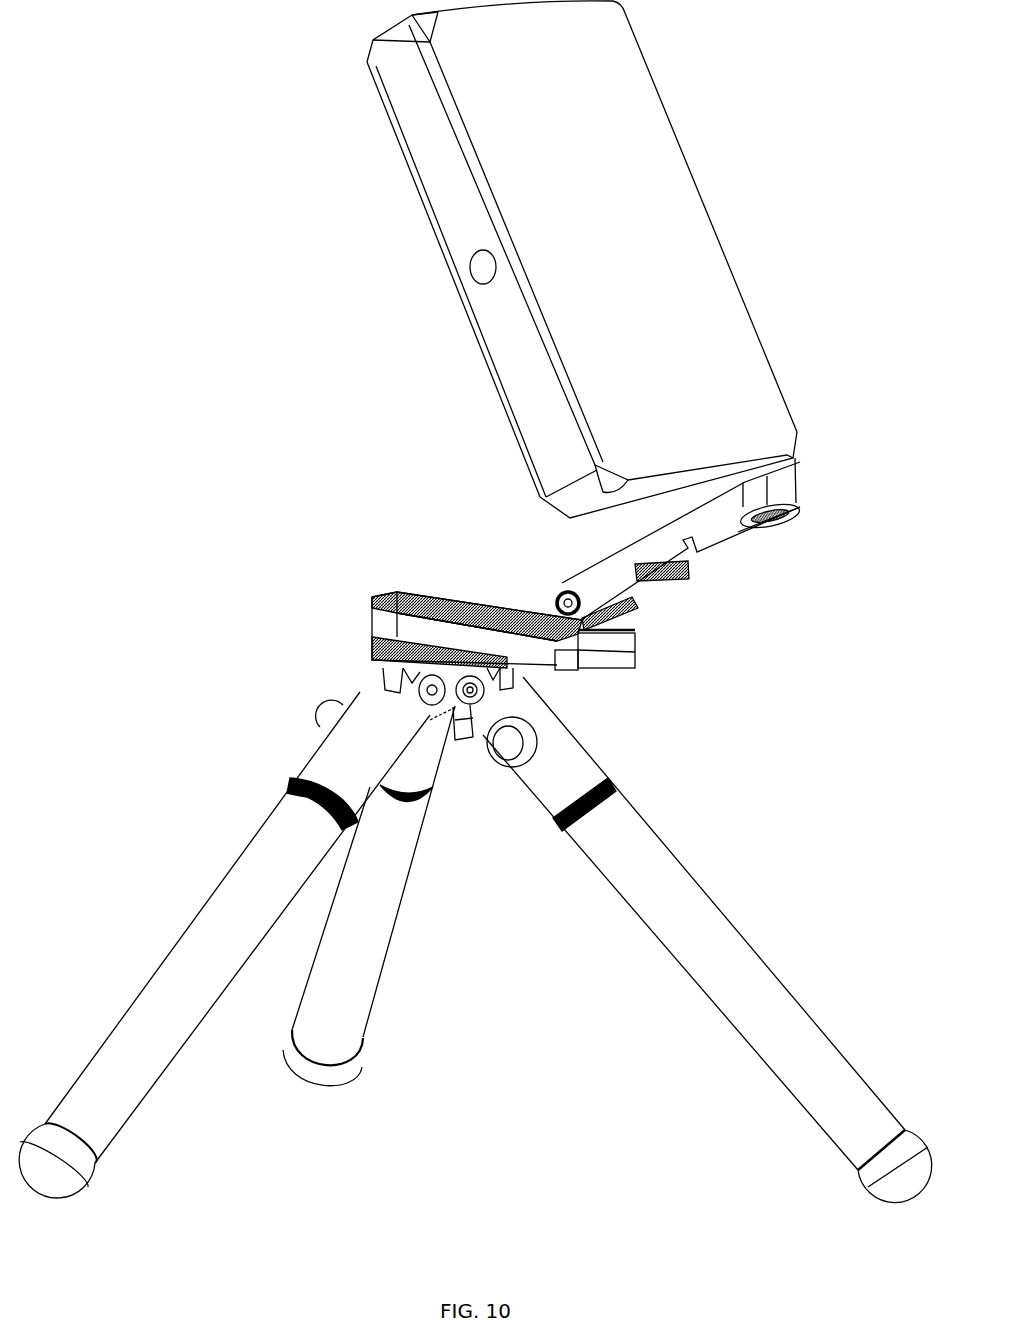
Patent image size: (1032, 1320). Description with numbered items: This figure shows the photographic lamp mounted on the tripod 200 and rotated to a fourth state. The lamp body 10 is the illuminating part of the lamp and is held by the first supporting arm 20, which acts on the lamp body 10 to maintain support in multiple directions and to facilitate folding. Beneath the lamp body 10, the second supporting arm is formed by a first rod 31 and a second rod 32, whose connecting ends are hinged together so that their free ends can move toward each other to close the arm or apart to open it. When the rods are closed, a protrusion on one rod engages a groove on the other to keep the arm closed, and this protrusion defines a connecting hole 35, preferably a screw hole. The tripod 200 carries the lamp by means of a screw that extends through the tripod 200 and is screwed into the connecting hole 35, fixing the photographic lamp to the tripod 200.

The lamp body 10 is at (678, 285).
The first supporting arm 20 is at (707, 528).
The first rod 31 is at (367, 617).
The second rod 32 is at (467, 595).
The connecting hole 35 is at (438, 595).
The tripod 200 is at (375, 688).